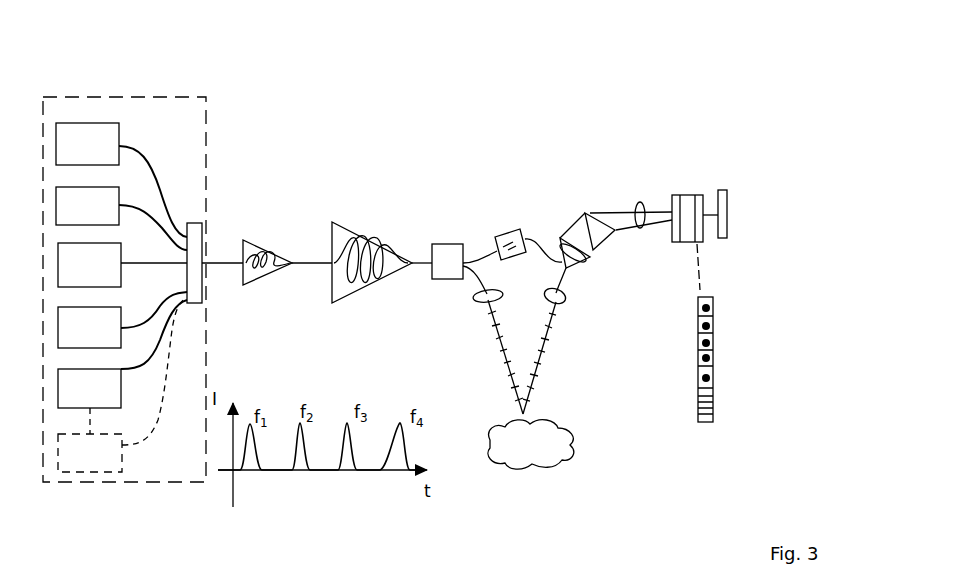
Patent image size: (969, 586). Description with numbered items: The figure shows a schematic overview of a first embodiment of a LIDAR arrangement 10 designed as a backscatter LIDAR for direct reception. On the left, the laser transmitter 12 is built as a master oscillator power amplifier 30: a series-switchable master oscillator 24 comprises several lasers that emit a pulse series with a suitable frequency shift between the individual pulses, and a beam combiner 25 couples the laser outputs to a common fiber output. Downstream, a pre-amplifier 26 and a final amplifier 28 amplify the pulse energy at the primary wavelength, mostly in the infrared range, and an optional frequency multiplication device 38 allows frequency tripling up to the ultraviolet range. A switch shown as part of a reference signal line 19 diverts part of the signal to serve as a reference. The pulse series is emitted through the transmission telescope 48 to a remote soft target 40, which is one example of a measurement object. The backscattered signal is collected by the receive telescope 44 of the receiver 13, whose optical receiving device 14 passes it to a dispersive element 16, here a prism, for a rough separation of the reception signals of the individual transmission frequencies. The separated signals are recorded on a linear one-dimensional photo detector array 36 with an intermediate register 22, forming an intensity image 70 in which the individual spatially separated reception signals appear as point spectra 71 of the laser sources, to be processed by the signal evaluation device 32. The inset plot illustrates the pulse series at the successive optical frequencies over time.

The LIDAR arrangement 10 is at (531, 110).
The laser transmitter 12 is at (434, 118).
The receiver 13 is at (652, 145).
The optical receiving device 14 is at (586, 196).
The dispersive element 16 is at (593, 230).
The reference signal line 19 is at (505, 235).
The intermediate register 22 is at (728, 202).
The master oscillator 24 is at (205, 112).
The beam combiner 25 is at (194, 242).
The pre-amplifier 26 is at (260, 245).
The final amplifier 28 is at (352, 232).
The master oscillator power amplifier 30 is at (454, 140).
The signal evaluation device 32 is at (747, 136).
The photo detector array 36 is at (689, 170).
The frequency multiplication device 38 is at (447, 252).
The soft target 40 is at (552, 443).
The receive telescope 44 is at (566, 293).
The transmission telescope 48 is at (483, 302).
The intensity image of the reception signals 70 is at (712, 298).
The point spectra 71 is at (706, 308).